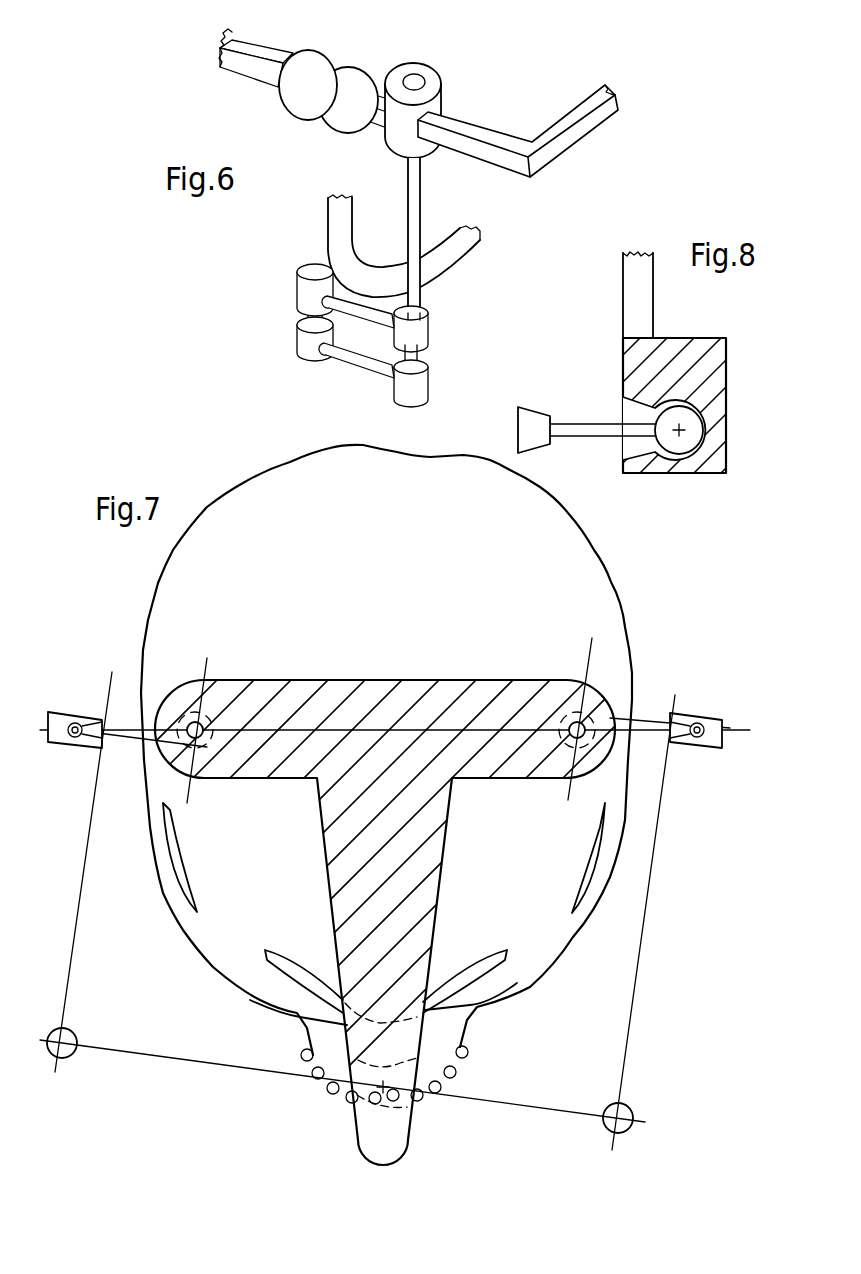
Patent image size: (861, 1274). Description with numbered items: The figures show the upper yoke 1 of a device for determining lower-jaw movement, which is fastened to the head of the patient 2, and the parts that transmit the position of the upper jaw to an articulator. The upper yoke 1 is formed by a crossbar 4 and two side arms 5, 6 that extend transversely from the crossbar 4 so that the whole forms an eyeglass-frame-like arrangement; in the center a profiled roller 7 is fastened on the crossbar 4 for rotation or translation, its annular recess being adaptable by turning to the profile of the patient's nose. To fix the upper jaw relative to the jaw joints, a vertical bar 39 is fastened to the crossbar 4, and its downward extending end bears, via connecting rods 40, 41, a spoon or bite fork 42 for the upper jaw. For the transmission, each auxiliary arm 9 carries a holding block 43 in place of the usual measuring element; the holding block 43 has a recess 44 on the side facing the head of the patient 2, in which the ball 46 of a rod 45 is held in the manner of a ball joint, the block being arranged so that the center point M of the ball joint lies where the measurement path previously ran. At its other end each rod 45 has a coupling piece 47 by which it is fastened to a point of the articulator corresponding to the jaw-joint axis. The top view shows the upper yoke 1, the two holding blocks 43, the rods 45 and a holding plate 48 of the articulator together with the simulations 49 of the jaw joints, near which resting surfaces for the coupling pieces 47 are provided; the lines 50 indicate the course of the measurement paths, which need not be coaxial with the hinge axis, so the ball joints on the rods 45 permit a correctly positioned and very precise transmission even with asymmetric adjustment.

In FIG. 6, the upper yoke 1 is at (575, 165).
In FIG. 7, the head of the patient 2 is at (612, 573).
In FIG. 6, the crossbar 4 is at (485, 130).
In FIG. 7, the crossbar 4 is at (248, 1070).
In FIG. 7, the side arm 5 is at (648, 917).
In FIG. 7, the side arm 6 is at (80, 912).
In FIG. 6, the profiled roller 7 is at (317, 67).
In FIG. 8, the auxiliary arm 9 is at (640, 310).
In FIG. 6, the vertical bar 39 is at (413, 207).
In FIG. 6, the connecting rod 40 is at (367, 315).
In FIG. 6, the connecting rod 41 is at (372, 370).
In FIG. 6, the bite fork 42 is at (445, 255).
In FIG. 8, the holding block 43 is at (722, 367).
In FIG. 7, the holding block 43 is at (58, 722).
In FIG. 8, the recess 44 is at (678, 453).
In FIG. 8, the rod 45 is at (598, 440).
In FIG. 7, the rod 45 is at (121, 728).
In FIG. 8, the ball 46 is at (694, 437).
In FIG. 8, the coupling piece 47 is at (532, 423).
In FIG. 7, the holding plate 48 is at (433, 897).
In FIG. 7, the simulation of the jaw joint 49 is at (202, 723).
In FIG. 7, the line 50 is at (204, 748).
In FIG. 8, the center point of the ball joint M is at (687, 423).